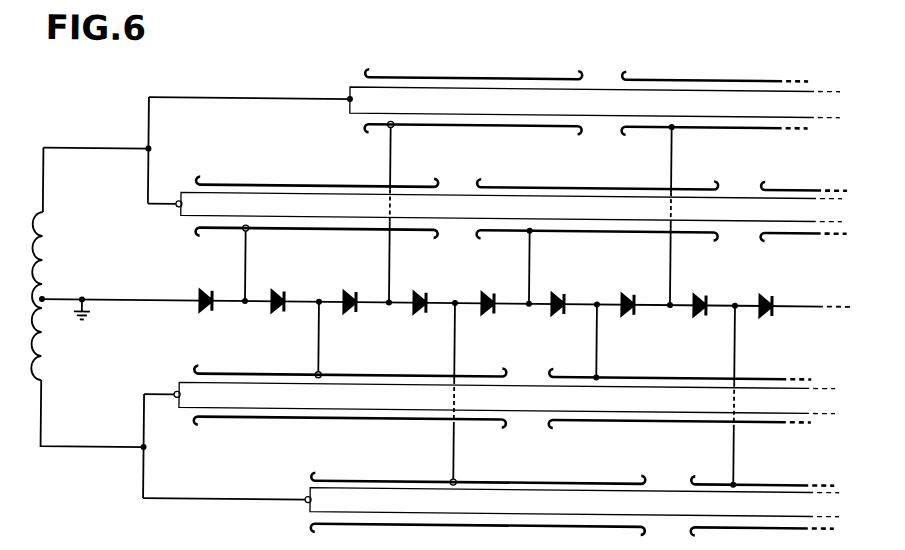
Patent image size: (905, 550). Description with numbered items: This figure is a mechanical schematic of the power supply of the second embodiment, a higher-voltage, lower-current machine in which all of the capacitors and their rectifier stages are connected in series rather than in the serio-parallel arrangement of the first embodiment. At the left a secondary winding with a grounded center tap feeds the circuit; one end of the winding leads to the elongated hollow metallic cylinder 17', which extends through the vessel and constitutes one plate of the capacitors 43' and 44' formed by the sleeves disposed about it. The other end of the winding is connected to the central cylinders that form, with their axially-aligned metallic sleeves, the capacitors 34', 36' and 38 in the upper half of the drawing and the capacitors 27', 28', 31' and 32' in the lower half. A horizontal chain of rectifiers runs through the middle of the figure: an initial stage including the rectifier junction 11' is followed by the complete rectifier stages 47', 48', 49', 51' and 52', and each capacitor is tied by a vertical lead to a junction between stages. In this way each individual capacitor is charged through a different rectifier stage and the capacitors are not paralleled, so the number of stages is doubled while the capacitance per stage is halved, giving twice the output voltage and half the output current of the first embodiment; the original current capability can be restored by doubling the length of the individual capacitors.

The rectifier junction 11' is at (193, 283).
The elongated hollow metallic cylinder 17' is at (249, 76).
The capacitor 27' is at (350, 356).
The capacitor 28' is at (680, 361).
The capacitor 31' is at (478, 464).
The capacitor 32' is at (762, 468).
The capacitor 34' is at (317, 163).
The capacitor 36' is at (596, 249).
The capacitor 38 is at (787, 232).
The capacitor 43' is at (471, 56).
The capacitor 44' is at (715, 66).
The rectifier stage 47' is at (271, 285).
The rectifier stage 48' is at (340, 283).
The rectifier stage 49' is at (415, 284).
The rectifier stage 51' is at (480, 284).
The rectifier stage 52' is at (555, 288).